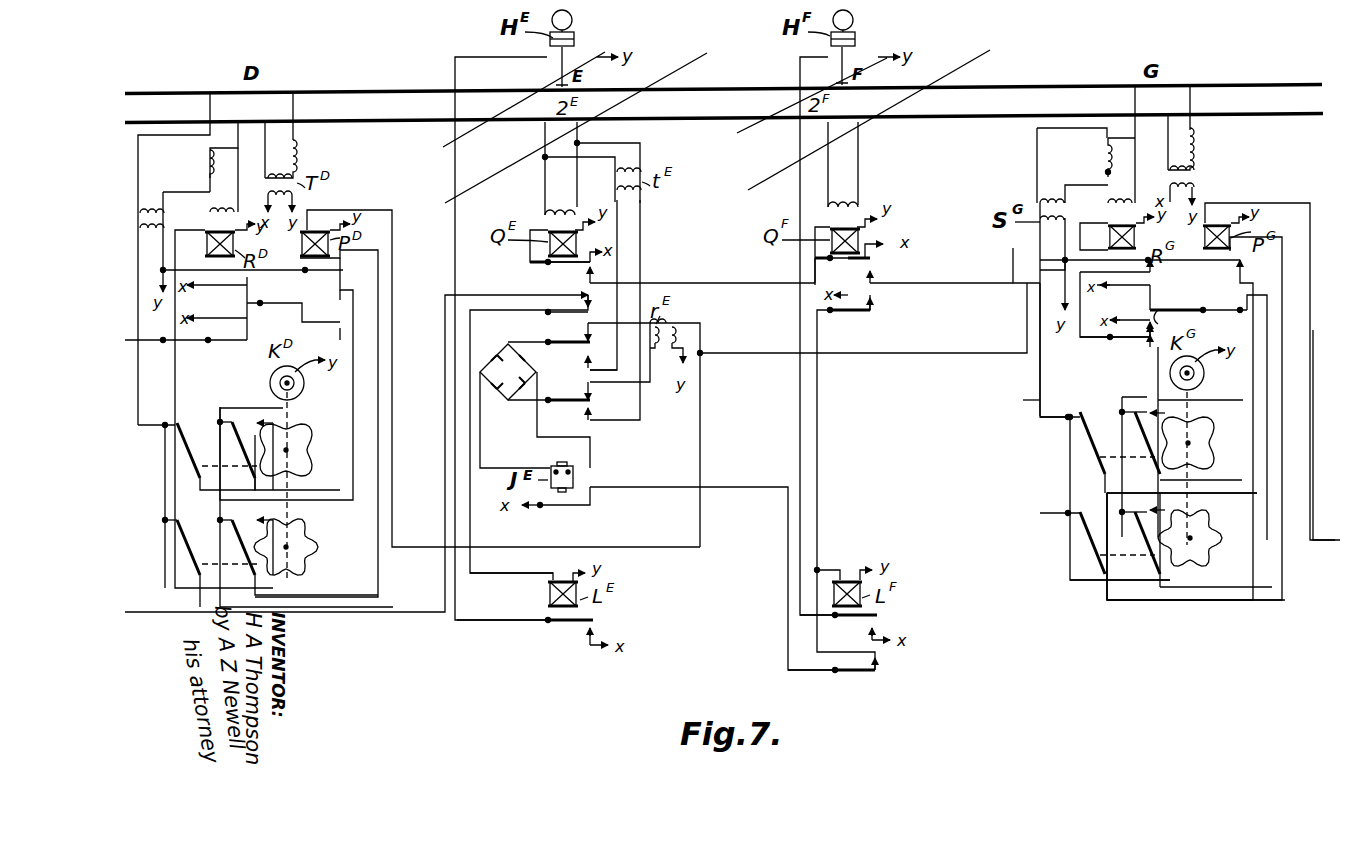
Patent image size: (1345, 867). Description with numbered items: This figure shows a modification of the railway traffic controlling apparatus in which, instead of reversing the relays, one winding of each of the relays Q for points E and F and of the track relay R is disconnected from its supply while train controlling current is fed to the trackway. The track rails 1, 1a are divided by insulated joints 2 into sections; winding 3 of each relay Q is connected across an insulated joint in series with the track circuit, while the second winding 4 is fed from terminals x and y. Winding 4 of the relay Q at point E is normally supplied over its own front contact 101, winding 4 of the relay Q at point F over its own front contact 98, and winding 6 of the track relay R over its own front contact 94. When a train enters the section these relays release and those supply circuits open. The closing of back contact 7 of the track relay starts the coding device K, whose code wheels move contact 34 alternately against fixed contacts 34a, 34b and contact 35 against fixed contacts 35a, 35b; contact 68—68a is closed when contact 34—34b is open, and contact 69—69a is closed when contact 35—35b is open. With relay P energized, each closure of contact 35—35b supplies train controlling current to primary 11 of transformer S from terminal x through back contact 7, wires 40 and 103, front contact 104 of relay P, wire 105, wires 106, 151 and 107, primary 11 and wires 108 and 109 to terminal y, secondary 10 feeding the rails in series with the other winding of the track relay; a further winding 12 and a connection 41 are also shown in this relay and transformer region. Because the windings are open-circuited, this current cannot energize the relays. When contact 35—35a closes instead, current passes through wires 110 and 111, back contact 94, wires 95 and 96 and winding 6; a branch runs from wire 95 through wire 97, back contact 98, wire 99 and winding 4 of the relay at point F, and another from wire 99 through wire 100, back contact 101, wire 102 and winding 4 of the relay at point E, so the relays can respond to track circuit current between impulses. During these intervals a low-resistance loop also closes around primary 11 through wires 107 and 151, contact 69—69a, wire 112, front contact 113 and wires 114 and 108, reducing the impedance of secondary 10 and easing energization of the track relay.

The track rail 1 is at (1022, 86).
The track rail 1a is at (980, 118).
The insulated joints 2 is at (254, 118).
The winding of relay Q 3 is at (707, 164).
The winding of relay Q 4 is at (577, 246).
The winding of track relay 6 is at (1134, 241).
The back contact of relay R^G 7 is at (1099, 298).
The secondary of transformer S^G 10 is at (1074, 187).
The primary of transformer S^G 11 is at (1052, 309).
The winding 12 is at (1106, 152).
The movable contact 34 is at (1146, 452).
The fixed contact 34a is at (1120, 417).
The fixed contact 34b is at (1165, 413).
The movable contact member 35 is at (1140, 548).
The fixed contact 35a is at (1116, 502).
The fixed contact 35b is at (1178, 516).
The wire 40 is at (1175, 322).
The conductor 41 is at (1158, 375).
The contact 68 is at (1091, 454).
The contact 68a is at (1074, 418).
The contact 69 is at (1095, 555).
The contact 69a is at (1068, 515).
The contact of relay R^G 94 is at (1127, 344).
The wire 95 is at (1104, 349).
The wire 96 is at (1094, 236).
The wire 97 is at (966, 285).
The contact of relay Q^F 98 is at (868, 260).
The wire 99 is at (816, 275).
The wire 100 is at (727, 278).
The contact of relay Q^E 101 is at (581, 266).
The wire 102 is at (528, 263).
The wire 103 is at (1176, 299).
The front contact of relay P^G 104 is at (1235, 414).
The wire 105 is at (1270, 555).
The wire 106 is at (1063, 564).
The wire 107 is at (1015, 405).
The wire 108 is at (1100, 214).
The wire 109 is at (1058, 292).
The wire 110 is at (1127, 537).
The wire 111 is at (1097, 492).
The wire 112 is at (1168, 602).
The front contact 113 is at (1240, 260).
The wire 114 is at (1152, 271).
The wire 151 is at (1067, 455).